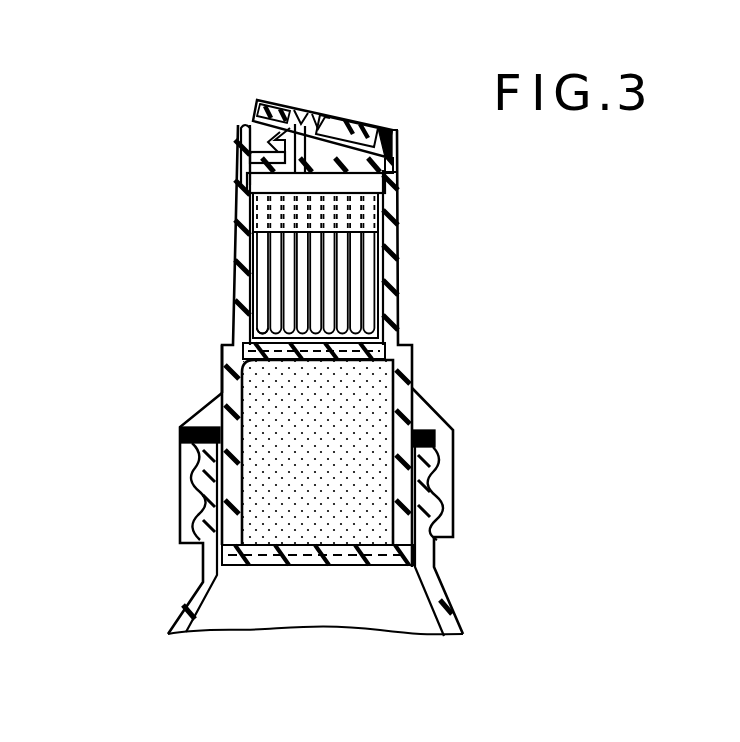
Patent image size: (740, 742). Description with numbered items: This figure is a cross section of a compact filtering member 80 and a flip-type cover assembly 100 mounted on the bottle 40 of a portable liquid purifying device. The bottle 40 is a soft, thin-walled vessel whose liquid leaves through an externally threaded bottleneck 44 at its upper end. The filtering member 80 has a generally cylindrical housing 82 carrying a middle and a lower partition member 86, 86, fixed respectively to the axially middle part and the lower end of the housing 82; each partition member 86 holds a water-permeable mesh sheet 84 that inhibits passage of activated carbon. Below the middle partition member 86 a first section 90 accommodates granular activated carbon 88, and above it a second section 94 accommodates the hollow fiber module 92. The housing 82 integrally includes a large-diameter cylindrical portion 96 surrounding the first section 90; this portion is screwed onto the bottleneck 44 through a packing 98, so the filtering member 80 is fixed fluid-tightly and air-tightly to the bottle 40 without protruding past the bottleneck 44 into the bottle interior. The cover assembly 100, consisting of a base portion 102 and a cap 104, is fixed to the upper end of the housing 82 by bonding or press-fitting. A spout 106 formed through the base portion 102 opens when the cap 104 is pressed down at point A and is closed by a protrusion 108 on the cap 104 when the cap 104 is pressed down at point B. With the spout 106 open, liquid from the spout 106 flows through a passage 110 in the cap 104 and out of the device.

The bottle 40 is at (455, 600).
The bottleneck 44 is at (205, 514).
The filtering member 80 is at (455, 258).
The housing 82 is at (405, 331).
The water-permeable mesh sheet 84 is at (390, 366).
The partition member 86 is at (243, 347).
The granular activated carbon 88 is at (332, 483).
The first section 90 is at (391, 477).
The hollow fiber module 92 is at (295, 268).
The second section 94 is at (268, 327).
The large-diameter cylindrical portion 96 is at (190, 490).
The packing 98 is at (433, 442).
The flip-type cover assembly 100 is at (217, 101).
The base portion 102 is at (245, 182).
The cap 104 is at (327, 107).
The spout 106 is at (245, 152).
The protrusion 108 is at (305, 108).
The passage 110 is at (262, 103).